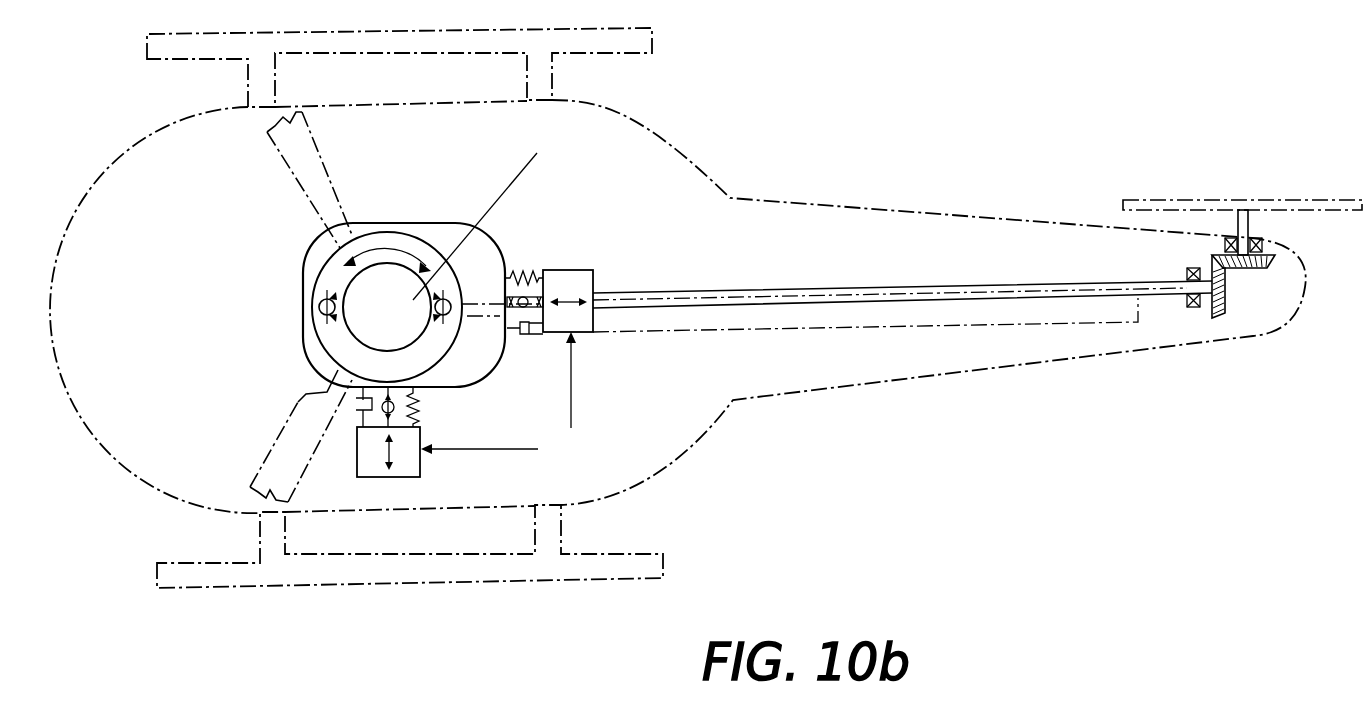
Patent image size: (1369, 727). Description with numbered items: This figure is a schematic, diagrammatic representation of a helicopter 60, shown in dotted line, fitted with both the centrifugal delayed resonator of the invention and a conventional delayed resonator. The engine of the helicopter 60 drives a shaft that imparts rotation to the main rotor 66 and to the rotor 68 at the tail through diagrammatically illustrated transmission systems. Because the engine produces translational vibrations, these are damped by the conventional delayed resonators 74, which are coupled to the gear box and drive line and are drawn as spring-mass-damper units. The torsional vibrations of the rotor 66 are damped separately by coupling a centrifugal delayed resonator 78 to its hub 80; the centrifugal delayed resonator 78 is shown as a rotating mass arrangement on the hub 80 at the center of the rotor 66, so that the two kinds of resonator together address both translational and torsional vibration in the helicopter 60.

The helicopter 60 is at (1086, 224).
The rotor 66 is at (278, 437).
The rotor 68 is at (1347, 198).
The conventional delayed resonator 74 is at (594, 270).
The centrifugal delayed resonator 78 is at (318, 305).
The hub 80 is at (466, 262).